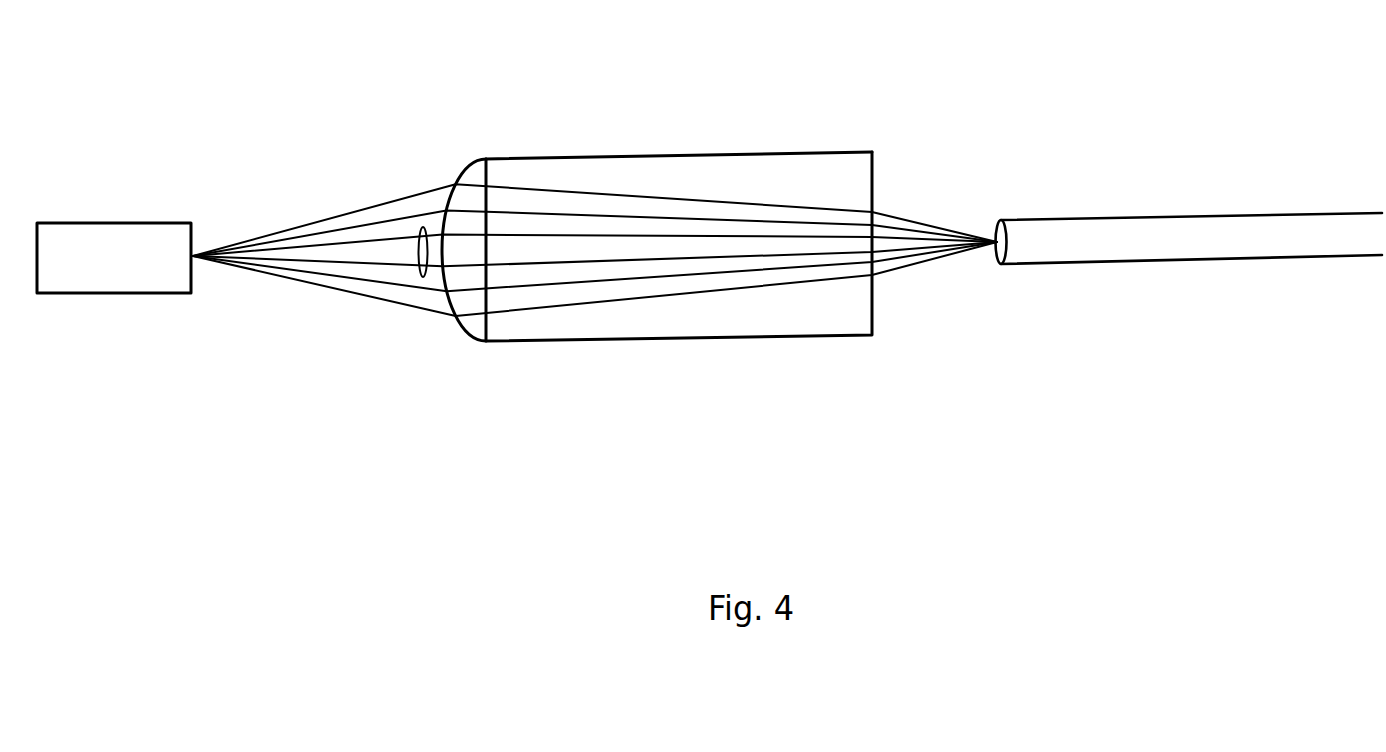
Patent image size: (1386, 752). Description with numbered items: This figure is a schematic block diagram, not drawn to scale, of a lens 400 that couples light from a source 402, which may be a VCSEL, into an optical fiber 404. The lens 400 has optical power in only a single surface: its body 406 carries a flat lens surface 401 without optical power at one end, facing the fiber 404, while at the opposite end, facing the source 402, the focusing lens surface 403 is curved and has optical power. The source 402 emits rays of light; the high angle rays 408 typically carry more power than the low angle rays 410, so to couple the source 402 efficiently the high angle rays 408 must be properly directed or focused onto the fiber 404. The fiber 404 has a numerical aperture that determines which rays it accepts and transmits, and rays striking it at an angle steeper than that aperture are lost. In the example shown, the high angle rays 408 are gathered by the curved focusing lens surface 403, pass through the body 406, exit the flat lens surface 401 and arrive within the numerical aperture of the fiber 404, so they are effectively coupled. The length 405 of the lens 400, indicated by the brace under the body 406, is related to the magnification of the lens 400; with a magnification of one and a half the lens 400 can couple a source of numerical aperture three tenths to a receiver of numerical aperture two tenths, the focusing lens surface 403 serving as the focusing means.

The lens 400 is at (752, 127).
The flat lens surface 401 is at (875, 177).
The source 402 is at (116, 228).
The focusing lens surface 403 is at (470, 336).
The optical fiber 404 is at (1275, 215).
The length 405 is at (875, 425).
The body 406 is at (641, 156).
The high angle rays 408 is at (402, 199).
The low angle rays 410 is at (423, 278).